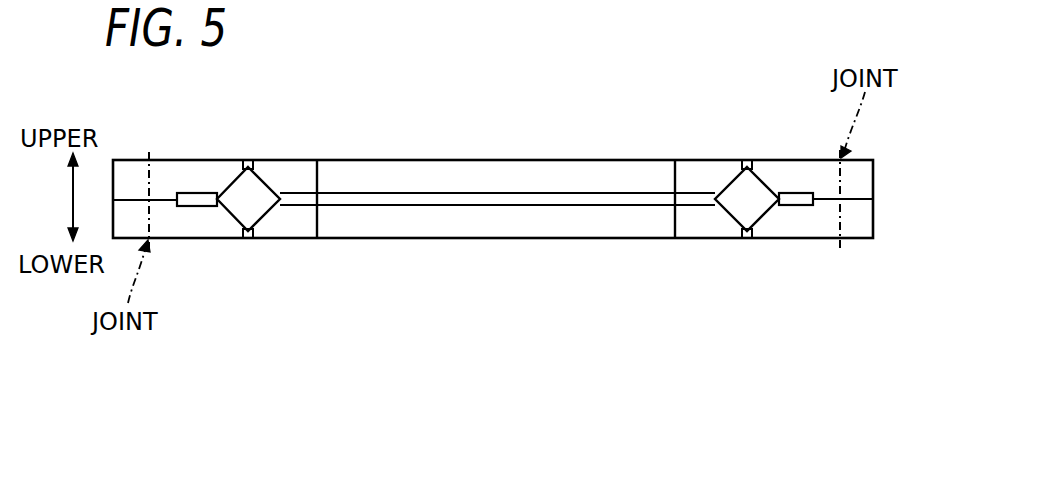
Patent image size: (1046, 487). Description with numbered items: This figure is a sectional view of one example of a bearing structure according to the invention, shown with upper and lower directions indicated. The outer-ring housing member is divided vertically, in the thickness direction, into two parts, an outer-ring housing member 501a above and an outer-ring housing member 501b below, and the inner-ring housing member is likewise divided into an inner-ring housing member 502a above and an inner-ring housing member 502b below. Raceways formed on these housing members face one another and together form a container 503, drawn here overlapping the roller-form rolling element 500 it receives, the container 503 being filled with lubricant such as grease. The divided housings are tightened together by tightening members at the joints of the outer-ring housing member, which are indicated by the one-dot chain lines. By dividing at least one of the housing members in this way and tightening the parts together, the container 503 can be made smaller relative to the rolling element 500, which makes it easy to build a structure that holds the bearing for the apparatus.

The rolling element 500 is at (738, 230).
The outer-ring housing member 501a is at (790, 168).
The outer-ring housing member 501b is at (808, 228).
The inner-ring housing member 502a is at (688, 166).
The inner-ring housing member 502b is at (683, 228).
The container 503 is at (733, 178).